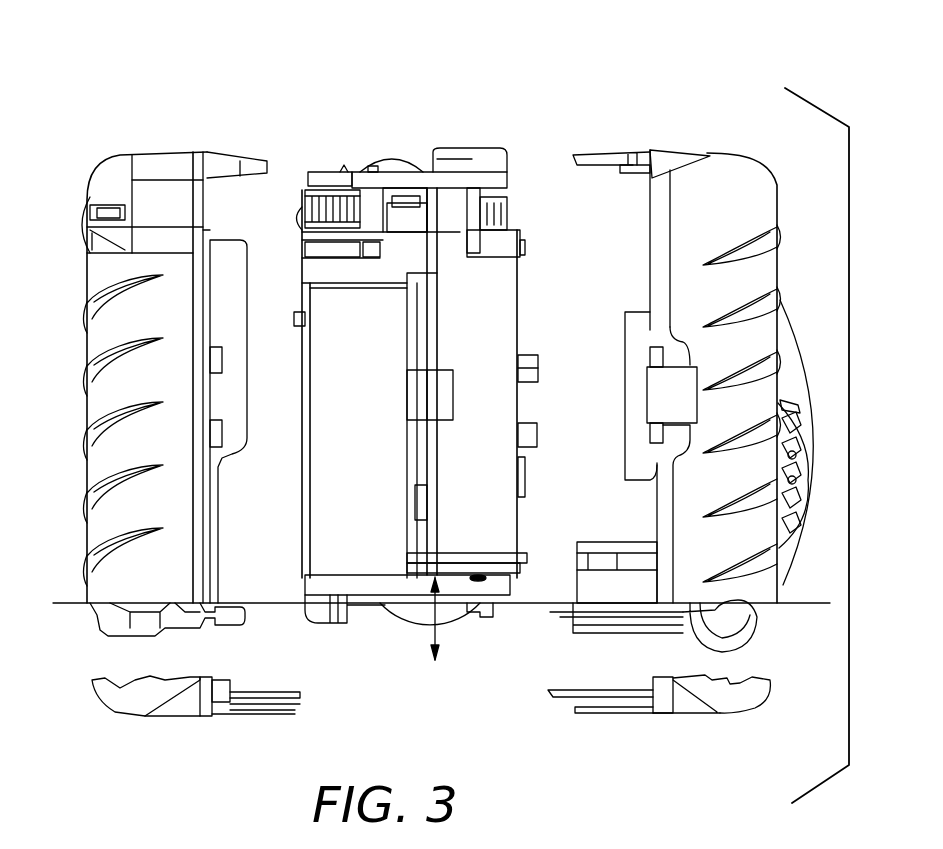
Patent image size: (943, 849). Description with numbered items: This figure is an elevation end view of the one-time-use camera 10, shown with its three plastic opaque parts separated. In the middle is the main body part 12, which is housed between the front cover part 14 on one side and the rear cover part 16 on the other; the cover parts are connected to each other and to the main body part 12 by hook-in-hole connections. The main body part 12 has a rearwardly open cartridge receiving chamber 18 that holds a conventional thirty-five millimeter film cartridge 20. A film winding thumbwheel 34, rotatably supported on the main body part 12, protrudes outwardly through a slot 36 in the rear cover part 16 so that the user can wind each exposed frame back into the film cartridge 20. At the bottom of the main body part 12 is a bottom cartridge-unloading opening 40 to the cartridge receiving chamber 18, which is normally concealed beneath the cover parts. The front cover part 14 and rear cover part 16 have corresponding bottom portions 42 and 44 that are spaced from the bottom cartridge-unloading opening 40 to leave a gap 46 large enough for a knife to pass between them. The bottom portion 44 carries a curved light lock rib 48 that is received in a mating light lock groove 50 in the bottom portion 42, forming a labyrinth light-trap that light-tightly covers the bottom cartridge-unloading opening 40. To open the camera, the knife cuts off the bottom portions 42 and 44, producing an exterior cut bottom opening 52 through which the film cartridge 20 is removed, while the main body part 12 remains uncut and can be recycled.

The one-time-use camera 10 is at (214, 58).
The main body part 12 is at (332, 150).
The front cover part 14 is at (677, 142).
The rear cover part 16 is at (125, 142).
The cartridge receiving chamber 18 is at (400, 346).
The film cartridge 20 is at (320, 372).
The film winding thumbwheel 34 is at (298, 190).
The slot 36 is at (103, 196).
The bottom cartridge-unloading opening 40 is at (492, 575).
The bottom portion 42 is at (715, 718).
The bottom portion 44 is at (160, 728).
The gap 46 is at (478, 620).
The light lock rib 48 is at (305, 700).
The light lock groove 50 is at (633, 700).
The exterior cut bottom opening 52 is at (193, 637).